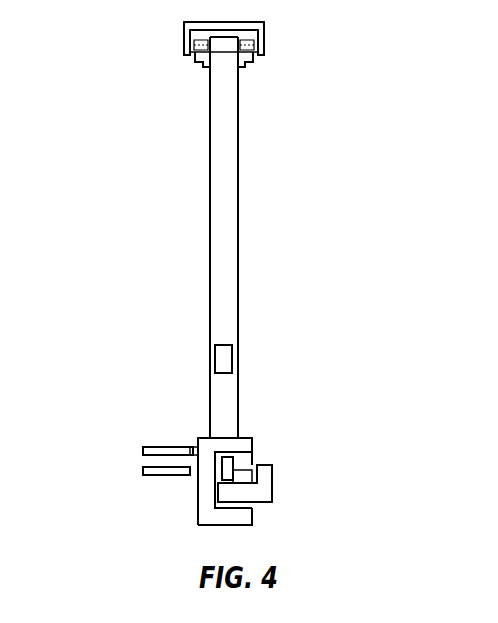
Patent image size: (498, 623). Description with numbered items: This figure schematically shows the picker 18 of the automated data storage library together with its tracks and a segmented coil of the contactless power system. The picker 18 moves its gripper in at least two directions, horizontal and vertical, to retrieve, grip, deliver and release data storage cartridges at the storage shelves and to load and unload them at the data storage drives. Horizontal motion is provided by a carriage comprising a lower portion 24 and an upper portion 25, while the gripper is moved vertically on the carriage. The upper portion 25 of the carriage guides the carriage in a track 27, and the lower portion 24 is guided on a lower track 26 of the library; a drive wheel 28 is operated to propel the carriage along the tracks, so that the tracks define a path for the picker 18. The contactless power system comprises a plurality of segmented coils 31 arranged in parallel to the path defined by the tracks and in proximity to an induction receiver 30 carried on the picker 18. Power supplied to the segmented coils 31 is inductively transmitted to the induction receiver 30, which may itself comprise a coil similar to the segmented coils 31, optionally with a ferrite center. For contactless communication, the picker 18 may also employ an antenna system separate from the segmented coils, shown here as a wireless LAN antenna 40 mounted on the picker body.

The picker 18 is at (210, 298).
The lower portion of the carriage 24 is at (245, 438).
The upper portion of the carriage 25 is at (205, 65).
The lower track 26 is at (272, 488).
The track 27 is at (185, 33).
The drive wheel 28 is at (218, 478).
The induction receiver 30 is at (170, 446).
The segmented coils 31 is at (170, 476).
The wireless LAN antenna 40 is at (225, 345).